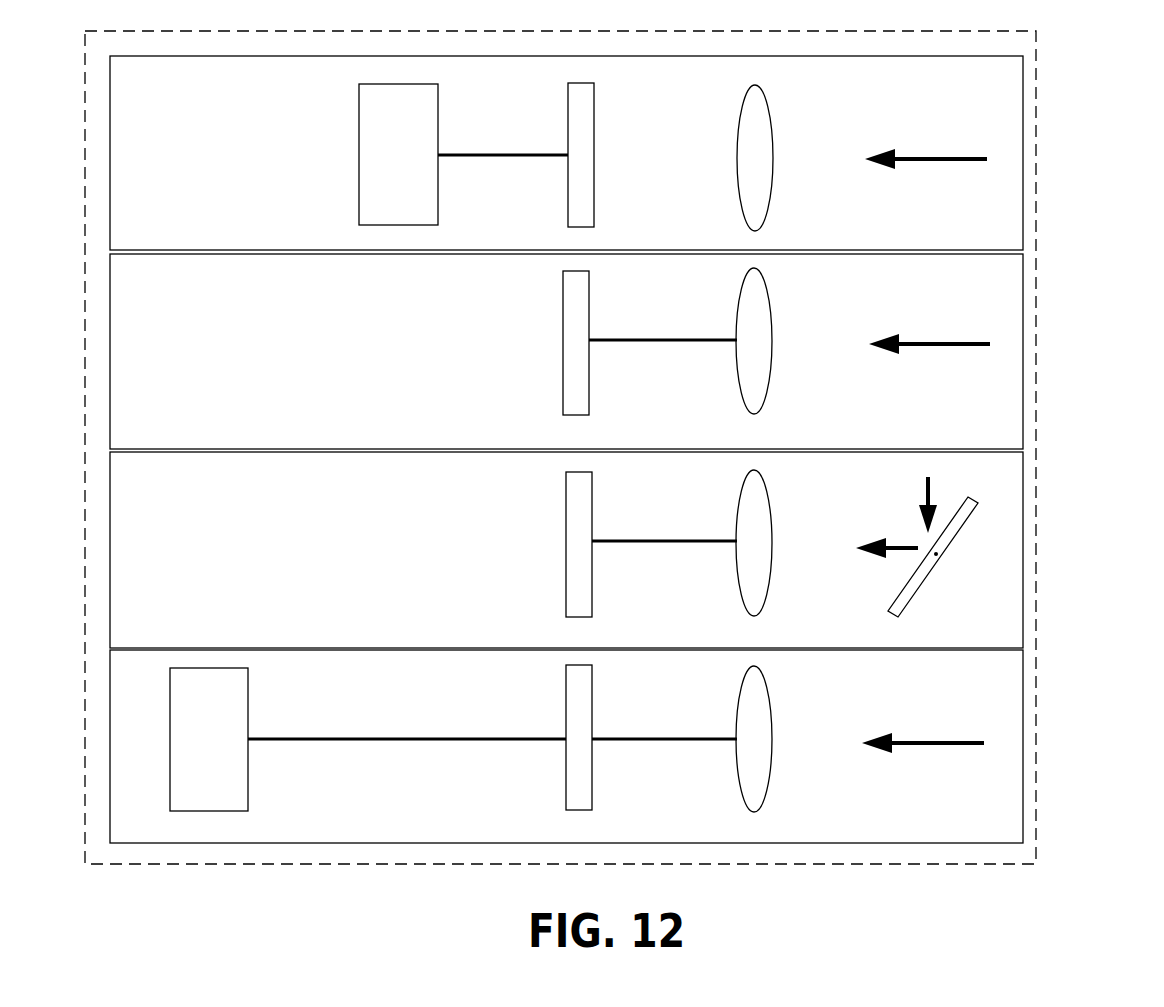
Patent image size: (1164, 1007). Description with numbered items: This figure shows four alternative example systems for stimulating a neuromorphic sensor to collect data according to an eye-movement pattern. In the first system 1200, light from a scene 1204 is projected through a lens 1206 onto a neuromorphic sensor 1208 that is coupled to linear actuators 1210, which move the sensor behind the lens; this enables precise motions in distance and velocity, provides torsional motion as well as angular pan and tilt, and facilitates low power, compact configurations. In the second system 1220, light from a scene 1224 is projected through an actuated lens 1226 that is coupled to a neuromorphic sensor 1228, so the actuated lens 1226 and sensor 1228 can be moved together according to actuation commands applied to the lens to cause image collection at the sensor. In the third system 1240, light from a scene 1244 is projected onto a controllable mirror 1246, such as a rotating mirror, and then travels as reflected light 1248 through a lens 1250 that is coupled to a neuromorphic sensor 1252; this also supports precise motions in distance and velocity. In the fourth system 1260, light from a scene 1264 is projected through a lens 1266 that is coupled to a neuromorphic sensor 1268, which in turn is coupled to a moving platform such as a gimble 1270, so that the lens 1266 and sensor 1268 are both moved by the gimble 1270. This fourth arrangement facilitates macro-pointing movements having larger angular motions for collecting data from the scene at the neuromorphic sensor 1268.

The system 1200 is at (1049, 122).
The light from a scene 1204 is at (913, 145).
The lens 1206 is at (771, 137).
The neuromorphic sensor 1208 is at (597, 128).
The linear actuators 1210 is at (440, 125).
The system 1220 is at (1050, 321).
The light from a scene 1224 is at (914, 336).
The actuated lens 1226 is at (772, 316).
The neuromorphic sensor 1228 is at (592, 315).
The system 1240 is at (1050, 516).
The light from a scene 1244 is at (921, 491).
The controllable mirror 1246 is at (921, 587).
The reflected light 1248 is at (899, 541).
The lens 1250 is at (763, 590).
The neuromorphic sensor 1252 is at (594, 508).
The system 1260 is at (1049, 709).
The light from a scene 1264 is at (909, 736).
The lens 1266 is at (771, 700).
The neuromorphic sensor 1268 is at (594, 708).
The gimble 1270 is at (251, 708).